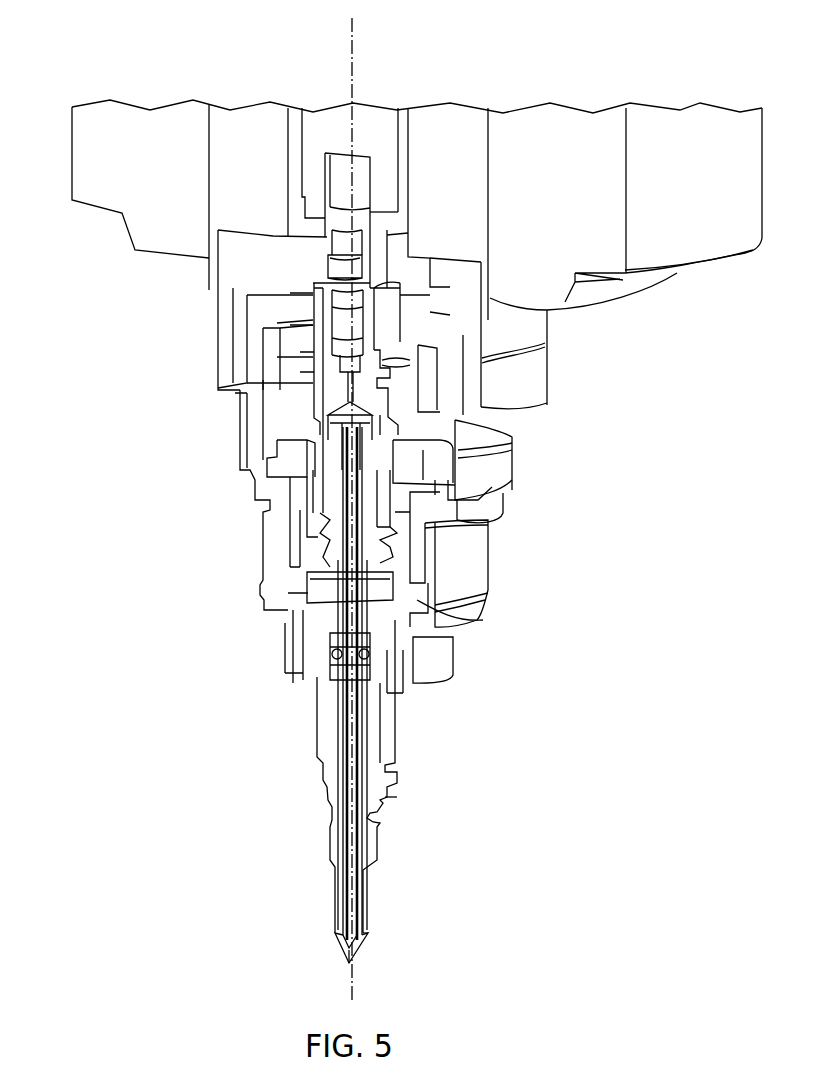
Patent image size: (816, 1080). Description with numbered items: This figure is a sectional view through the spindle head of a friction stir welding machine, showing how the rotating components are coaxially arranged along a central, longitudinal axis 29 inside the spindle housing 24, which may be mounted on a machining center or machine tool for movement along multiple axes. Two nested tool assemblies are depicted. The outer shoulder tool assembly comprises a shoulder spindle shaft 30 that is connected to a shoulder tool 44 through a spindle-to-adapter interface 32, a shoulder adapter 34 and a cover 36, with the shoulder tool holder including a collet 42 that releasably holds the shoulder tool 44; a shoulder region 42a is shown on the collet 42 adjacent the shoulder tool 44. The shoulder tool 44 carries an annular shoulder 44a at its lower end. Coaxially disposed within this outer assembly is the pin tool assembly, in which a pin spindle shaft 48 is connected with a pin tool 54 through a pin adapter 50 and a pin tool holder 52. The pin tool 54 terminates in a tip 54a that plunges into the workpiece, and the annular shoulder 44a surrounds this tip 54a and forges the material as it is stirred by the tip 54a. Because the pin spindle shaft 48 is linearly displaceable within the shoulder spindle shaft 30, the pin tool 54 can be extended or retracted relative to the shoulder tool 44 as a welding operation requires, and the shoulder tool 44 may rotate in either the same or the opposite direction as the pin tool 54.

The spindle housing 24 is at (122, 192).
The central longitudinal axis 29 is at (353, 44).
The shoulder spindle shaft 30 is at (237, 210).
The spindle-to-adapter interface 32 is at (522, 374).
The shoulder adapter 34 is at (288, 312).
The cover 36 is at (263, 422).
The collet 42 is at (385, 713).
The nozzle body shoulder 42a is at (387, 802).
The shoulder tool 44 is at (377, 847).
The annular shoulder 44a is at (372, 938).
The pin spindle shaft 48 is at (326, 128).
The pin adapter 50 is at (380, 322).
The pin tool holder 52 is at (380, 493).
The pin tool 54 is at (347, 570).
The tip 54a is at (338, 955).